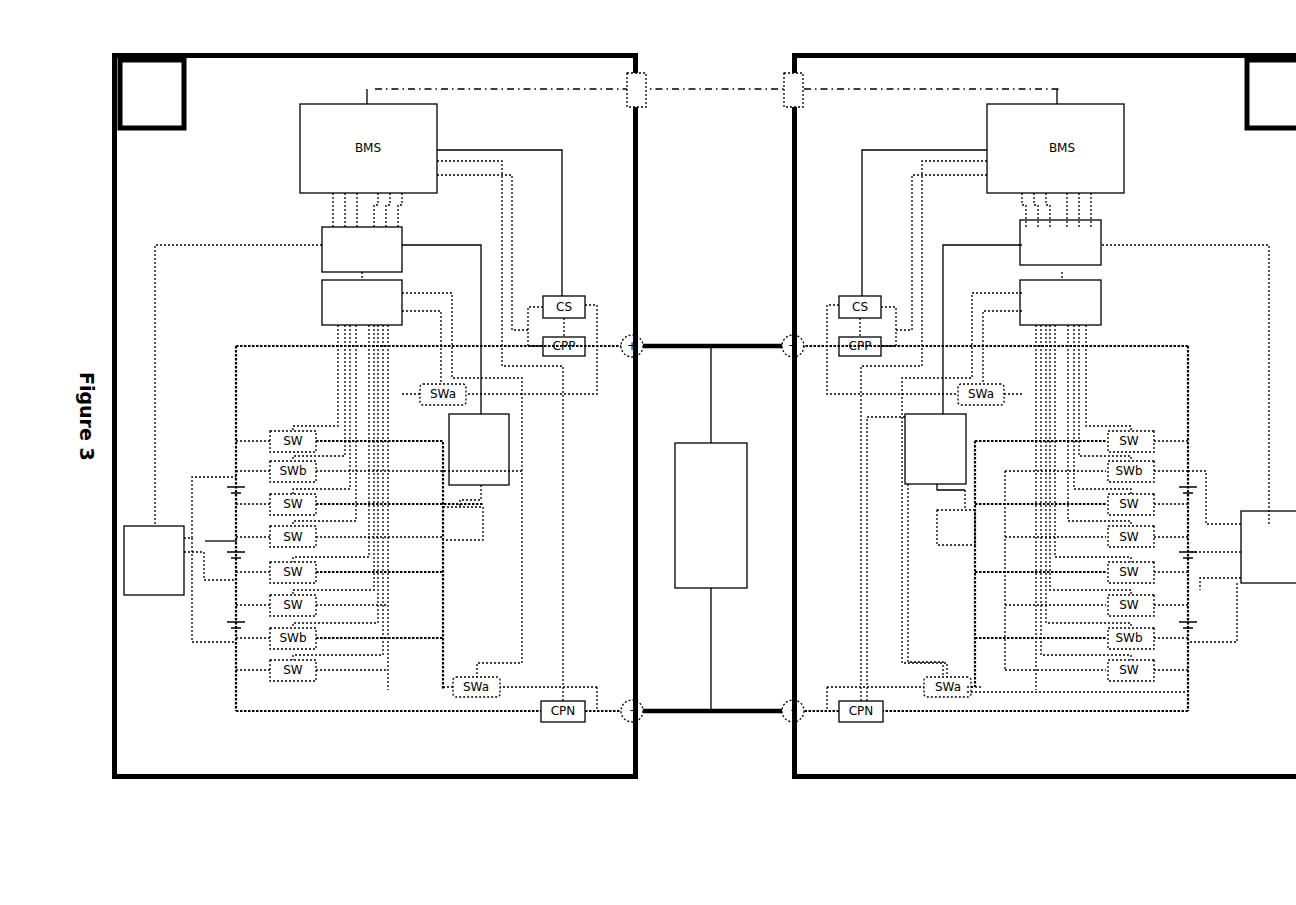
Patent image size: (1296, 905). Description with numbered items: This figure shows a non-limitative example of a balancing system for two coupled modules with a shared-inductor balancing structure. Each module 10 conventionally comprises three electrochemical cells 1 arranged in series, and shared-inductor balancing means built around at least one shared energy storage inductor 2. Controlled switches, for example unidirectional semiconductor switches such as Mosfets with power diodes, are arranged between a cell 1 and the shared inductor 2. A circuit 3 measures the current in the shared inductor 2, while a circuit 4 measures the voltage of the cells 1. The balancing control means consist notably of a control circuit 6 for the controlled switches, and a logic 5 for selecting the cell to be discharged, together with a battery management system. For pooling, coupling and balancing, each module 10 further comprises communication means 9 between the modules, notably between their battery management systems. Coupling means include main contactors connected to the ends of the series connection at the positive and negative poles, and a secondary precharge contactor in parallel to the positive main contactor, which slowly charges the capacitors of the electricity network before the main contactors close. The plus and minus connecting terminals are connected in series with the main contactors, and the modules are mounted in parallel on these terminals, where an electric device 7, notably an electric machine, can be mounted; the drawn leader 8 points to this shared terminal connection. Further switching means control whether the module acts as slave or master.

The electrochemical cell 1 is at (230, 630).
The shared energy storage inductor 2 is at (490, 525).
The current measuring circuit 3 is at (872, 498).
The voltage measuring circuit 4 is at (545, 528).
The cell selection logic 5 is at (711, 246).
The control circuit 6 is at (711, 302).
The electric device 7 is at (711, 528).
The power bus 8 is at (682, 340).
The communication means 9 is at (699, 80).
The module 10 is at (706, 416).